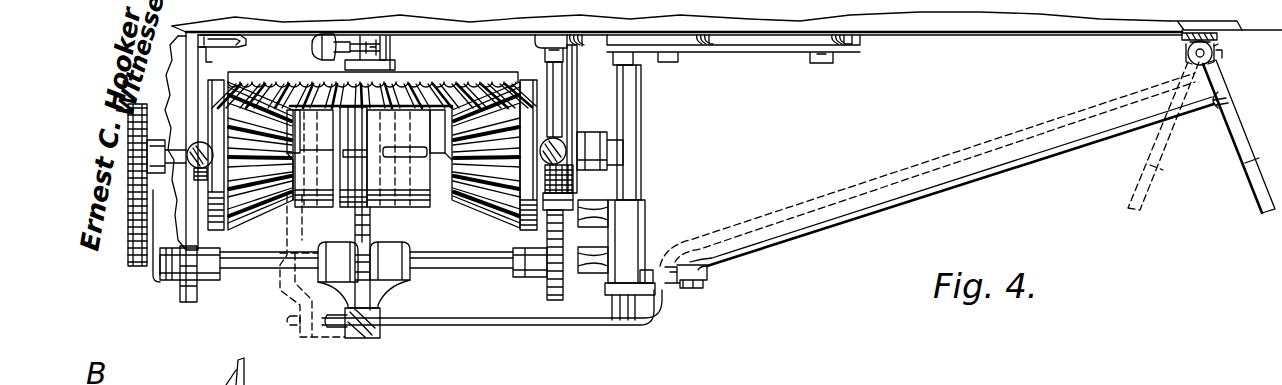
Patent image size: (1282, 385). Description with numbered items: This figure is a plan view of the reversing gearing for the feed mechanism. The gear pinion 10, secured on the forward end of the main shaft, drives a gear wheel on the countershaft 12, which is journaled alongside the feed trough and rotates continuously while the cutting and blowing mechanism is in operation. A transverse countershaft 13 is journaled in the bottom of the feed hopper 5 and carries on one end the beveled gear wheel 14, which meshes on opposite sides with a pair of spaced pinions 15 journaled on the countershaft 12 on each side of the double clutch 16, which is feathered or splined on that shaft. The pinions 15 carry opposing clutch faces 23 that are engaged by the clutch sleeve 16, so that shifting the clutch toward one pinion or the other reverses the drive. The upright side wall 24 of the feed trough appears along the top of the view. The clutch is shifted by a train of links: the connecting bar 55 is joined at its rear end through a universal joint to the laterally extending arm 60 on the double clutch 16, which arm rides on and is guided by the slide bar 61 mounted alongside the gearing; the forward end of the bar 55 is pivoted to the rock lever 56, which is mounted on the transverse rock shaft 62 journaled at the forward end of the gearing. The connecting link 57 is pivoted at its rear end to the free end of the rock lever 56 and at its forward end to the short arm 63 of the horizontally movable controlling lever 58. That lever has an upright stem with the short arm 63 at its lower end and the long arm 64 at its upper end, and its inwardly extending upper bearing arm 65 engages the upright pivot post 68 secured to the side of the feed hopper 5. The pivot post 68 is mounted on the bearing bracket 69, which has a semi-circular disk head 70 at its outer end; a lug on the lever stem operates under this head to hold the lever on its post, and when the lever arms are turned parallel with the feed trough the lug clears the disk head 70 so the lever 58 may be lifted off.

The feed hopper 5 is at (641, 120).
The gear pinion 10 is at (140, 258).
The countershaft 12 is at (170, 272).
The transverse countershaft 13 is at (386, 57).
The beveled gear wheel 14 is at (450, 80).
The pinion 15 is at (500, 205).
The double clutch 16 is at (414, 202).
The clutch face 23 is at (446, 198).
The upright side wall of feed trough 24 is at (1017, 28).
The connecting bar 55 is at (566, 326).
The rock lever 56 is at (655, 296).
The connecting link 57 is at (922, 188).
The controlling lever 58 is at (1252, 196).
The laterally extending arm 60 is at (396, 272).
The slide bar 61 is at (487, 264).
The transverse rock shaft 62 is at (708, 272).
The short arm 63 is at (1220, 112).
The long arm 64 is at (1243, 160).
The upper bearing arm 65 is at (1192, 58).
The upright pivot post 68 is at (1220, 44).
The bearing bracket 69 is at (1188, 20).
The semi-circular disk head 70 is at (1223, 56).